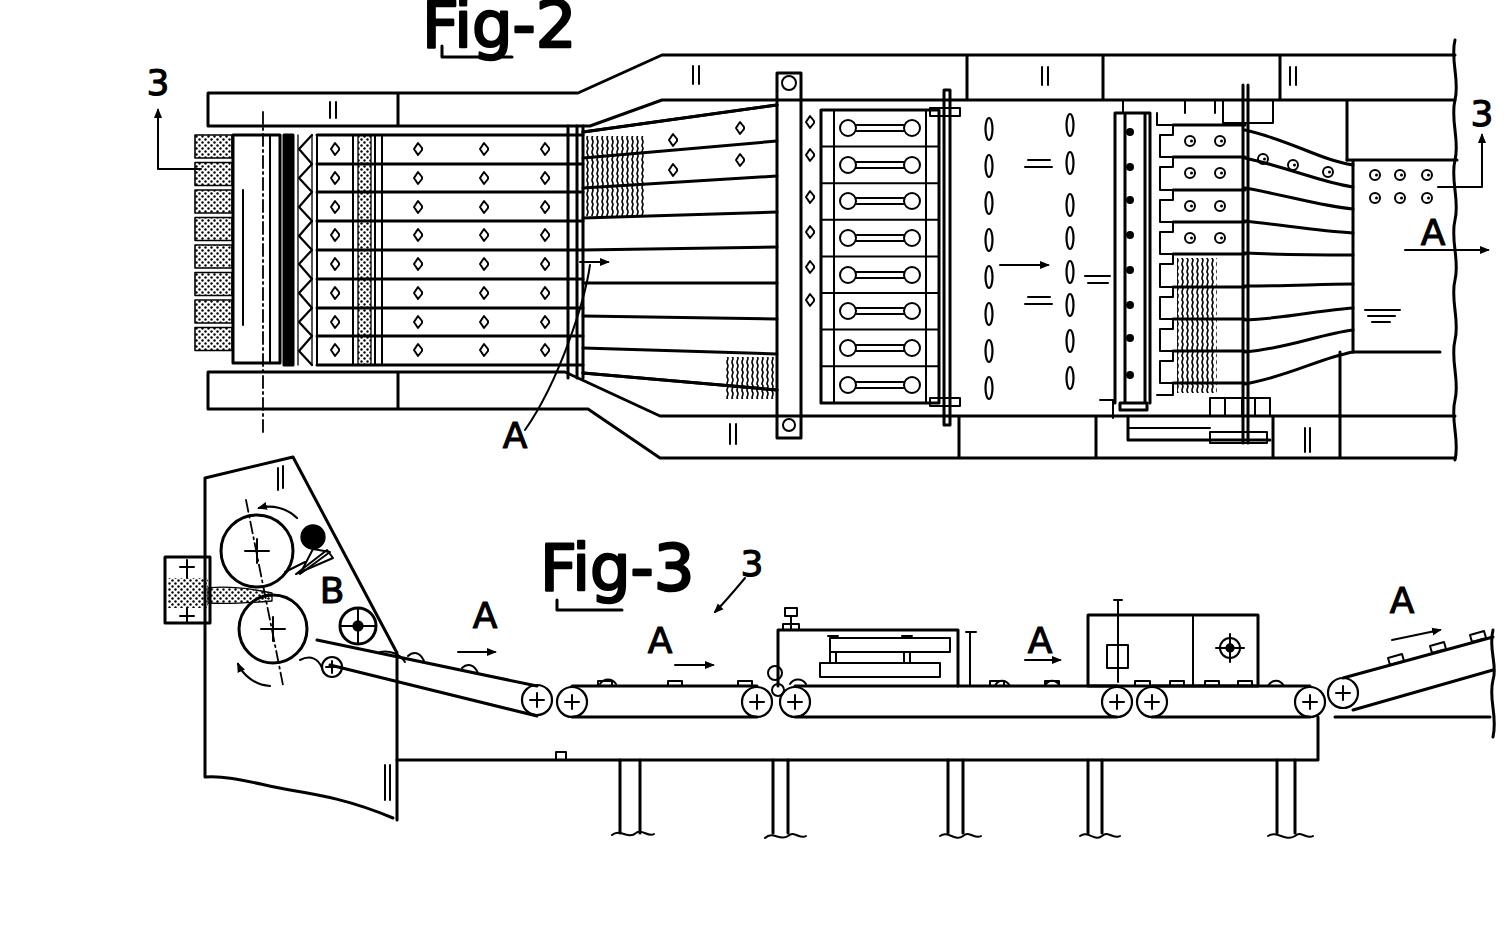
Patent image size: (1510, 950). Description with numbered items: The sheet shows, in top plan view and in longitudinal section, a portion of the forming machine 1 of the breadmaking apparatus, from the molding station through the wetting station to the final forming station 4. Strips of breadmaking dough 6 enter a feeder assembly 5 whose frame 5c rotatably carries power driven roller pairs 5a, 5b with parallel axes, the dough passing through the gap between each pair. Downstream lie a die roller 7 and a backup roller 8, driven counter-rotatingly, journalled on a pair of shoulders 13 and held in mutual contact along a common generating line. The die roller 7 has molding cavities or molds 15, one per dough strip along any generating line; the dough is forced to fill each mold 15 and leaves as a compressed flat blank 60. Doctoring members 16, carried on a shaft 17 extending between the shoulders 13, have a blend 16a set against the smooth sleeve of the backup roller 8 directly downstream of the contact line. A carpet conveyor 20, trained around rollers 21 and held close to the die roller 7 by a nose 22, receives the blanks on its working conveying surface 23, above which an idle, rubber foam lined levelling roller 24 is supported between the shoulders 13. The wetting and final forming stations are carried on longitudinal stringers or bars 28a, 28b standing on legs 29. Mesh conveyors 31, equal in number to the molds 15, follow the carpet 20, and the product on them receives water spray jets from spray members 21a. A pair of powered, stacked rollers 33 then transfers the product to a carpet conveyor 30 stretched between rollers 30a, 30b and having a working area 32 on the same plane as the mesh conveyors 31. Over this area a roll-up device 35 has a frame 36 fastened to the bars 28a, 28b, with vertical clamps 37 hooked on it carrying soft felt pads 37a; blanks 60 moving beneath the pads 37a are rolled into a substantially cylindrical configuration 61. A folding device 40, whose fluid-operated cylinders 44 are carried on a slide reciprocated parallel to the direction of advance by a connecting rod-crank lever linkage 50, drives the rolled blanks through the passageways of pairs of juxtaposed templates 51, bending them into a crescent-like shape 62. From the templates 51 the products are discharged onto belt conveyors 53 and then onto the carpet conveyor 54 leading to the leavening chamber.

In FIG. 2, the forming machine 1 is at (1237, 48).
In FIG. 3, the forming machine 1 is at (826, 548).
In FIG. 3, the final forming station 4 is at (990, 570).
In FIG. 3, the feeder assembly 5 is at (166, 628).
In FIG. 3, the roller of roller pair 5a is at (168, 578).
In FIG. 3, the roller of roller pair 5b is at (165, 620).
In FIG. 3, the frame 5c is at (178, 628).
In FIG. 2, the breadmaking dough 6 is at (195, 250).
In FIG. 2, the die roller 7 is at (305, 370).
In FIG. 3, the die roller 7 is at (296, 662).
In FIG. 2, the backup roller 8 is at (246, 138).
In FIG. 2, the shoulders 13 is at (290, 135).
In FIG. 3, the shoulders 13 is at (217, 470).
In FIG. 2, the molding cavities 15 is at (305, 138).
In FIG. 3, the molding cavities 15 is at (253, 663).
In FIG. 3, the doctoring members 16 is at (326, 555).
In FIG. 3, the blend 16a is at (330, 570).
In FIG. 3, the shaft 17 is at (326, 530).
In FIG. 3, the carpet conveyor 20 is at (462, 698).
In FIG. 3, the rollers 21 is at (343, 676).
In FIG. 3, the spray members 21a is at (566, 762).
In FIG. 3, the nose 22 is at (325, 678).
In FIG. 3, the working conveying surface 23 is at (444, 665).
In FIG. 2, the levelling roller 24 is at (365, 370).
In FIG. 3, the levelling roller 24 is at (374, 620).
In FIG. 2, the longitudinal stringer 28a is at (880, 440).
In FIG. 2, the longitudinal stringer 28b is at (862, 62).
In FIG. 3, the longitudinal stringer 28b is at (885, 762).
In FIG. 3, the legs 29 is at (773, 790).
In FIG. 2, the carpet conveyor 30 is at (1048, 118).
In FIG. 3, the carpet conveyor 30 is at (958, 718).
In FIG. 3, the roller 30a is at (823, 717).
In FIG. 3, the roller 30b is at (1118, 717).
In FIG. 2, the mesh conveyors 31 is at (620, 375).
In FIG. 3, the mesh conveyors 31 is at (705, 718).
In FIG. 2, the working area 32 is at (1013, 218).
In FIG. 3, the working area 32 is at (1000, 685).
In FIG. 3, the rollers 33 is at (772, 668).
In FIG. 2, the roll-up device 35 is at (948, 125).
In FIG. 3, the roll-up device 35 is at (832, 636).
In FIG. 3, the frame 36 is at (933, 636).
In FIG. 3, the clamps 37 is at (880, 640).
In FIG. 3, the pads 37a is at (878, 680).
In FIG. 2, the folding device 40 is at (1105, 372).
In FIG. 3, the folding device 40 is at (1180, 602).
In FIG. 3, the fluid-operated cylinders 44 is at (1120, 608).
In FIG. 2, the connecting rod-crank lever linkage 50 is at (1160, 440).
In FIG. 3, the pairs of juxtaposed templates 51 is at (1170, 683).
In FIG. 3, the belt conveyors 53 is at (1196, 718).
In FIG. 3, the carpet conveyor 54 is at (1395, 712).
In FIG. 2, the flat blank 60 is at (336, 145).
In FIG. 3, the flat blank 60 is at (606, 684).
In FIG. 2, the cylindrical configuration 61 is at (1078, 268).
In FIG. 3, the cylindrical configuration 61 is at (1002, 683).
In FIG. 2, the crescent-like shape 62 is at (1278, 165).
In FIG. 3, the crescent-like shape 62 is at (1278, 684).